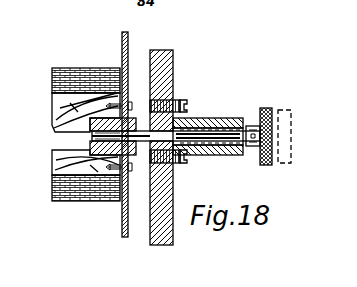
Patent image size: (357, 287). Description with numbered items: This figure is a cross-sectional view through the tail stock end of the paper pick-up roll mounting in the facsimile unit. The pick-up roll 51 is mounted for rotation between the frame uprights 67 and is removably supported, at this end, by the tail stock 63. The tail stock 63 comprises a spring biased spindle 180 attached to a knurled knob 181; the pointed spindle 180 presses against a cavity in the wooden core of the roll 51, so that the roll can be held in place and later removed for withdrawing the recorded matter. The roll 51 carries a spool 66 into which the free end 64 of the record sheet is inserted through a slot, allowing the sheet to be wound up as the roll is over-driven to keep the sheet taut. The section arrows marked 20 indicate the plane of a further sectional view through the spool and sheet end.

The section line 20 is at (5, 60).
The pick-up roll 51 is at (76, 70).
The free end of the record sheet 64 is at (90, 130).
The spool 66 is at (60, 153).
The frame upright 67 is at (173, 57).
The tail stock 63 is at (217, 118).
The spring biased spindle 180 is at (143, 143).
The knurled knob 181 is at (268, 110).